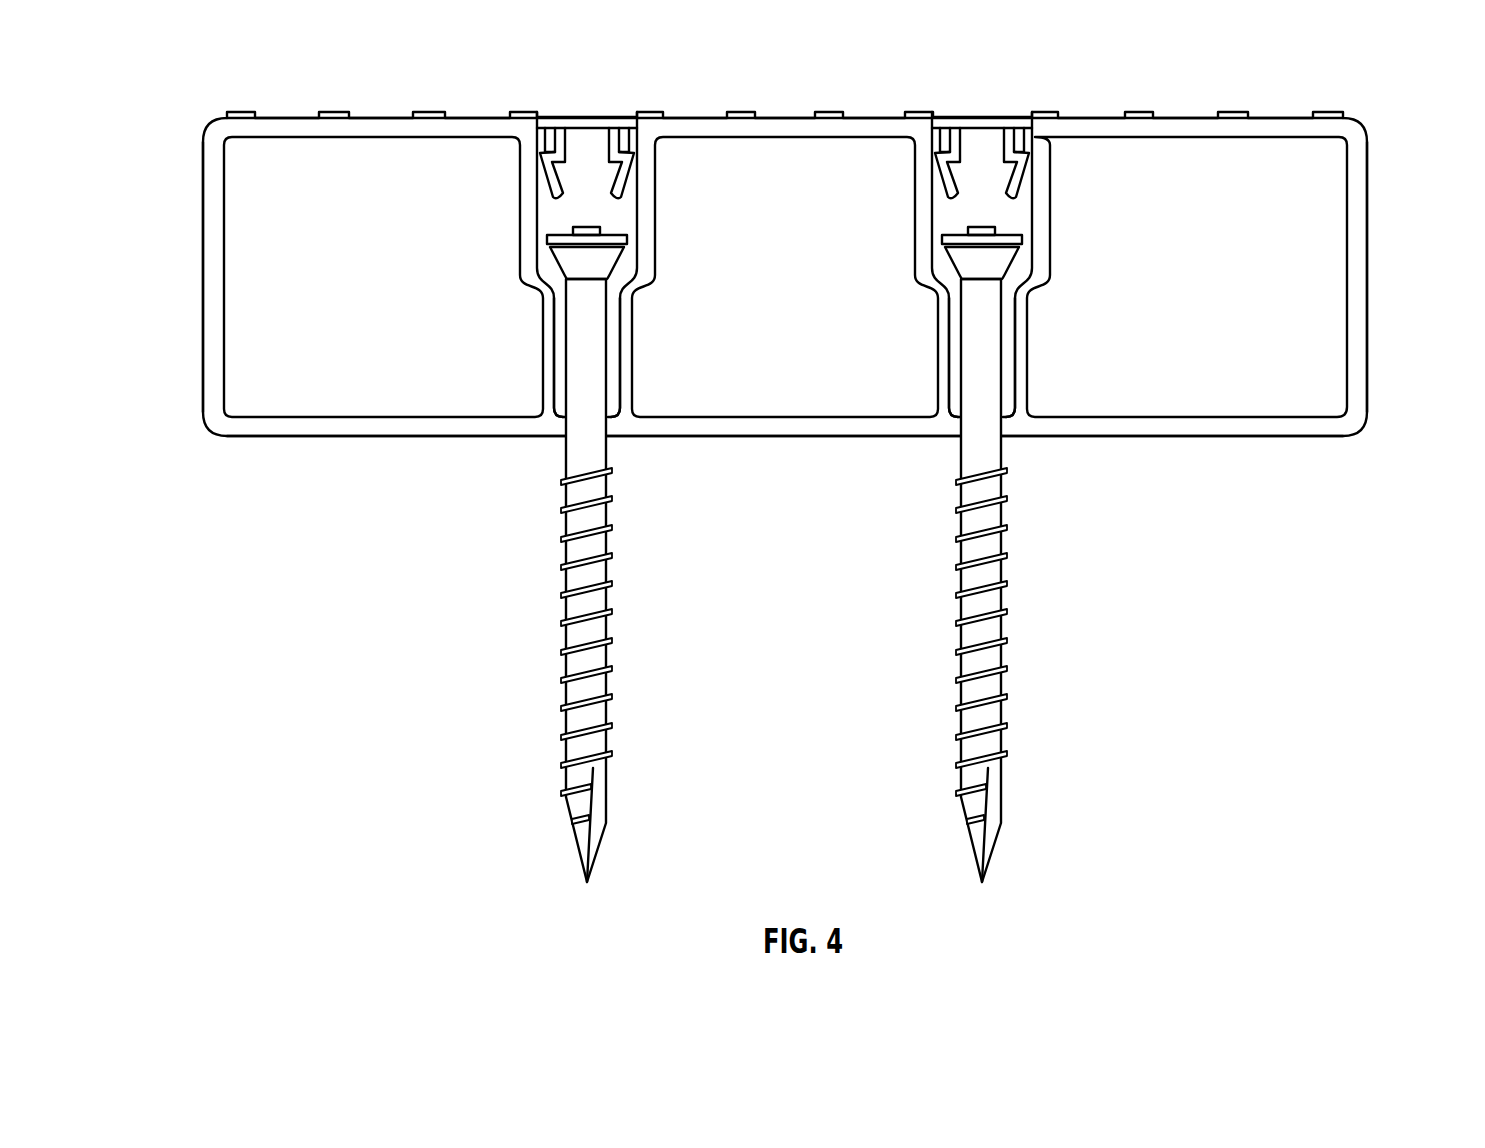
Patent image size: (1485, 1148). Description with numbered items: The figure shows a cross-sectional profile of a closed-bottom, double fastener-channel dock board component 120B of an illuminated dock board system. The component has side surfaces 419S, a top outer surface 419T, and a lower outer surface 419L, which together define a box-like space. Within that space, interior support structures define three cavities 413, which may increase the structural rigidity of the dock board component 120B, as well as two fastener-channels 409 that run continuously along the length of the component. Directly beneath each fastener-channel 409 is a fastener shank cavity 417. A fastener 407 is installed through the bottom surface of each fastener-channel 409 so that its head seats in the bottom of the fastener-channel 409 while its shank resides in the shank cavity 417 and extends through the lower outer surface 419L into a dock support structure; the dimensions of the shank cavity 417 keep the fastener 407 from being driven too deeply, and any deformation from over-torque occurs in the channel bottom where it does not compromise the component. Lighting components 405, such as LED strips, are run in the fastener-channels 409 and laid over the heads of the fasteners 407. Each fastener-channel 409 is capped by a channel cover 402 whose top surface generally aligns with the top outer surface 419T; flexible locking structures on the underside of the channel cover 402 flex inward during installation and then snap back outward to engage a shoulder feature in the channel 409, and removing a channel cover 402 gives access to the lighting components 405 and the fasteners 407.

The closed-bottom, double fastener-channel dock board component 120B is at (194, 92).
The channel cover 402 is at (608, 112).
The lighting component 405 is at (583, 227).
The fastener 407 is at (608, 715).
The fastener-channel 409 is at (617, 212).
The cavity 413 is at (390, 281).
The fastener shank cavity 417 is at (612, 392).
The side surface 419S is at (202, 272).
The top outer surface 419T is at (1183, 117).
The lower outer surface 419L is at (1275, 438).